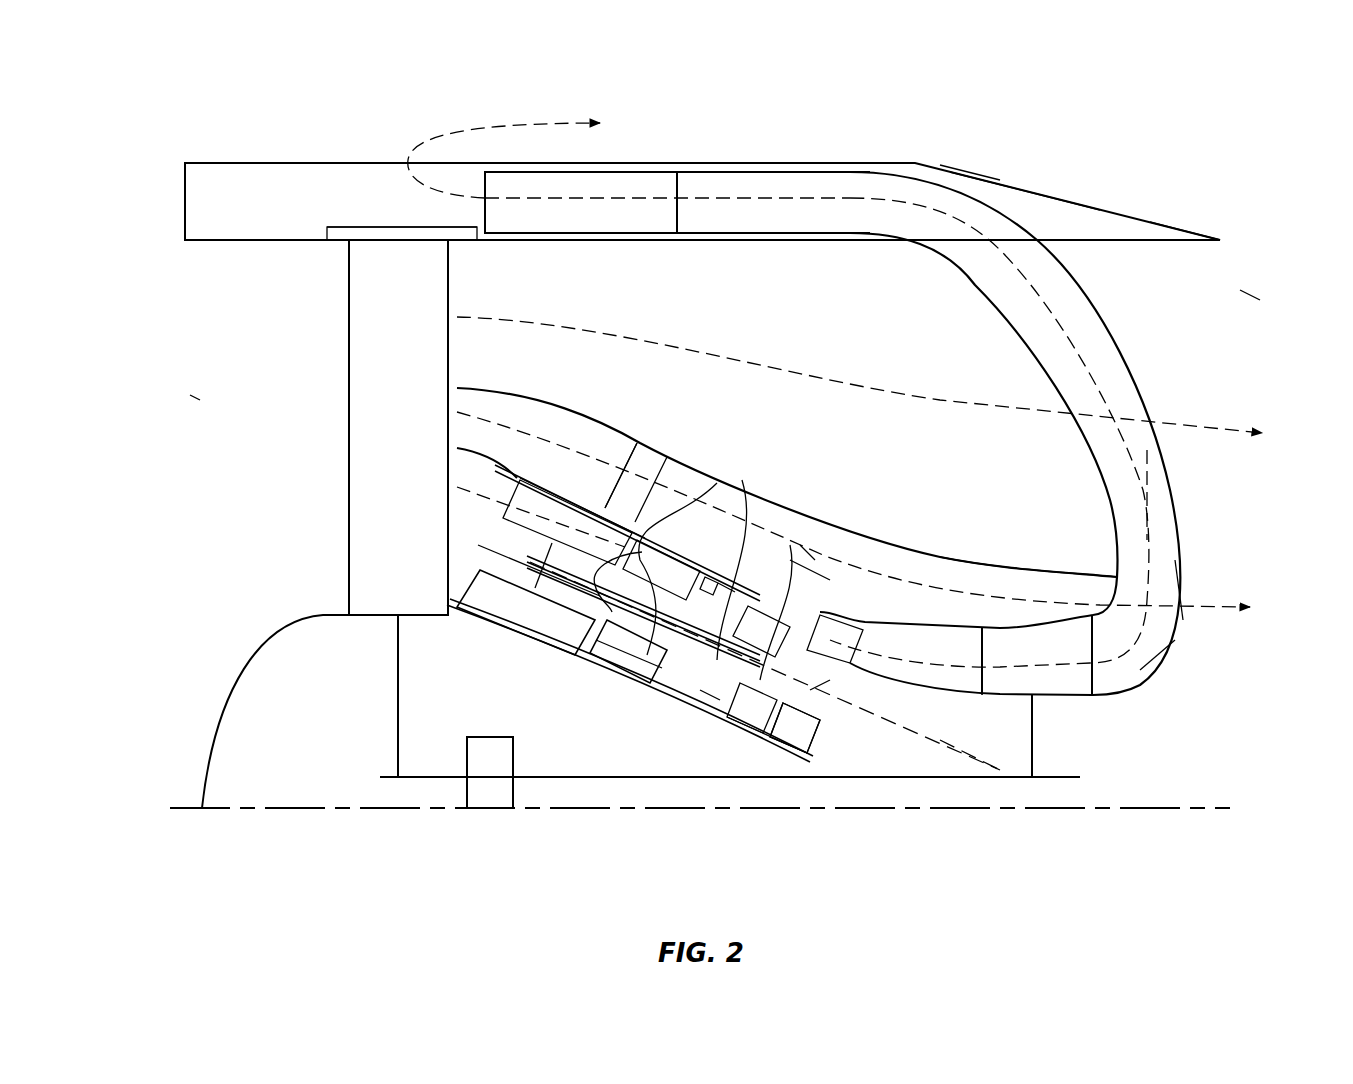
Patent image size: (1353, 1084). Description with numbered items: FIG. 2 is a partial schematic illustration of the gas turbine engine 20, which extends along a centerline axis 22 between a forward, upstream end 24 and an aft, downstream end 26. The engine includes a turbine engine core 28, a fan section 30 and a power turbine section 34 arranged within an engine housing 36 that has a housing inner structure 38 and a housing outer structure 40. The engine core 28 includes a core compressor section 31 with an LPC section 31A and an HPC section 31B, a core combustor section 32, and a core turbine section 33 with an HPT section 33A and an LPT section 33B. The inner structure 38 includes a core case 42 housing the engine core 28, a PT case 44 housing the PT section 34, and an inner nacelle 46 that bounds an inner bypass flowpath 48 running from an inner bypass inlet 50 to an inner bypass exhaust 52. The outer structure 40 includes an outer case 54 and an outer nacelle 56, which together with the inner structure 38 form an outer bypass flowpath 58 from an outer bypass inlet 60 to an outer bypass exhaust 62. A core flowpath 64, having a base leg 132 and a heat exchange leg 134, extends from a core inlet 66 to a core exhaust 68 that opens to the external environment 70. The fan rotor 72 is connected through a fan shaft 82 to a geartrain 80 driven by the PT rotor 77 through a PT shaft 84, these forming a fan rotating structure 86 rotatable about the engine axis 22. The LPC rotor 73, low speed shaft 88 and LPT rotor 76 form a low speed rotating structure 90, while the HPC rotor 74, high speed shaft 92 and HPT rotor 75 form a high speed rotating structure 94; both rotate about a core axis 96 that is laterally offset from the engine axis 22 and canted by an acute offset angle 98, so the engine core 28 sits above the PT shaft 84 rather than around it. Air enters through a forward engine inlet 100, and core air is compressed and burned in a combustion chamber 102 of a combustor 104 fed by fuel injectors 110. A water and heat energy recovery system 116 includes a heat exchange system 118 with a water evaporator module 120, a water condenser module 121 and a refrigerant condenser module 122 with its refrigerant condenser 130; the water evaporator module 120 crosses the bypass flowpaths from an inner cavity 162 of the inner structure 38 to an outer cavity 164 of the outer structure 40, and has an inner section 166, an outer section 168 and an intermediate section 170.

The gas turbine engine 20 is at (200, 105).
The centerline axis 22 is at (178, 820).
The forward upstream end 24 is at (185, 203).
The aft downstream end 26 is at (1220, 240).
The turbine engine core 28 is at (790, 545).
The fan section 30 is at (375, 227).
The core compressor section 31 is at (628, 720).
The low pressure compressor section 31A is at (560, 655).
The high pressure compressor section 31B is at (630, 677).
The core combustor section 32 is at (690, 705).
The core turbine section 33 is at (790, 860).
The high pressure turbine section 33A is at (730, 735).
The low pressure turbine section 33B is at (775, 755).
The power turbine section 34 is at (1045, 605).
The engine housing 36 is at (970, 140).
The housing inner structure 38 is at (918, 547).
The housing outer structure 40 is at (905, 163).
The core case 42 is at (825, 610).
The power turbine case 44 is at (1000, 615).
The inner nacelle 46 is at (975, 557).
The inner bypass flowpath 48 is at (805, 545).
The inner bypass inlet 50 is at (448, 420).
The inner bypass exhaust 52 is at (1183, 610).
The outer case 54 is at (340, 227).
The outer nacelle 56 is at (265, 163).
The outer bypass flowpath 58 is at (757, 295).
The outer bypass inlet 60 is at (448, 288).
The outer bypass exhaust 62 is at (1228, 285).
The core flowpath 64 is at (570, 520).
The core inlet 66 is at (457, 463).
The core exhaust 68 is at (415, 150).
The environment 70 is at (712, 96).
The fan rotor 72 is at (398, 695).
The LPC rotor 73 is at (517, 616).
The HPC rotor 74 is at (742, 500).
The HPT rotor 75 is at (790, 625).
The LPT rotor 76 is at (808, 738).
The PT rotor 77 is at (1048, 653).
The geartrain 80 is at (502, 786).
The fan shaft 82 is at (430, 777).
The power turbine shaft 84 is at (587, 777).
The fan rotating structure 86 is at (406, 780).
The low speed shaft 88 is at (820, 692).
The low speed rotating structure 90 is at (845, 685).
The high speed shaft 92 is at (690, 540).
The high speed rotating structure 94 is at (640, 560).
The core axis 96 is at (480, 547).
The offset angle 98 is at (937, 740).
The forward engine inlet 100 is at (190, 398).
The combustion chamber 102 is at (810, 575).
The combustor 104 is at (705, 700).
The fuel injectors 110 is at (745, 578).
The water and heat energy recovery system 116 is at (1182, 382).
The heat exchange system 118 is at (1140, 372).
The water evaporator module 120 is at (827, 236).
The water condenser module 121 is at (635, 236).
The refrigerant condenser module 122 is at (655, 450).
The refrigerant condenser 130 is at (621, 475).
The base leg 132 is at (505, 500).
The heat exchange leg 134 is at (1088, 320).
The inner cavity 162 is at (1132, 736).
The outer cavity 164 is at (1080, 231).
The inner section 166 is at (1145, 668).
The outer section 168 is at (796, 228).
The intermediate section 170 is at (1128, 460).